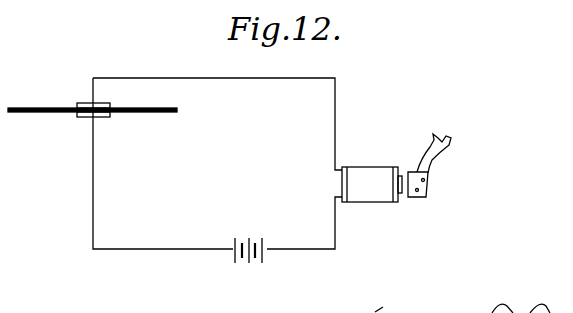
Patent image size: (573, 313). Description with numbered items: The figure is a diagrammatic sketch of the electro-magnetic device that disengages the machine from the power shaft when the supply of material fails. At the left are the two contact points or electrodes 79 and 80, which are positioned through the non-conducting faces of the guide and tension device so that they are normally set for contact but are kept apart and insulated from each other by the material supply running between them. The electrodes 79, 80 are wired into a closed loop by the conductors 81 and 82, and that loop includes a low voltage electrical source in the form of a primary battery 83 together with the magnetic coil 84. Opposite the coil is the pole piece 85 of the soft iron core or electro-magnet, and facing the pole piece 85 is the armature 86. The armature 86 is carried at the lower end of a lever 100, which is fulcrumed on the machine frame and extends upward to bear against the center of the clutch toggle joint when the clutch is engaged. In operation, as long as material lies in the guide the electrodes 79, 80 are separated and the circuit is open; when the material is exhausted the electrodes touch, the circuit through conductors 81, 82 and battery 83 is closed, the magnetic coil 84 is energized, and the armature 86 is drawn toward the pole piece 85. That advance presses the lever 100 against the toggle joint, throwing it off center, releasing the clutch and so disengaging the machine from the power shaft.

The electrode 79 is at (80, 103).
The electrode 80 is at (80, 117).
The conductor 81 is at (94, 196).
The conductor 82 is at (213, 78).
The battery 83 is at (244, 265).
The magnetic coil 84 is at (362, 173).
The pole piece 85 is at (402, 193).
The armature 86 is at (410, 171).
The lever 100 is at (435, 152).